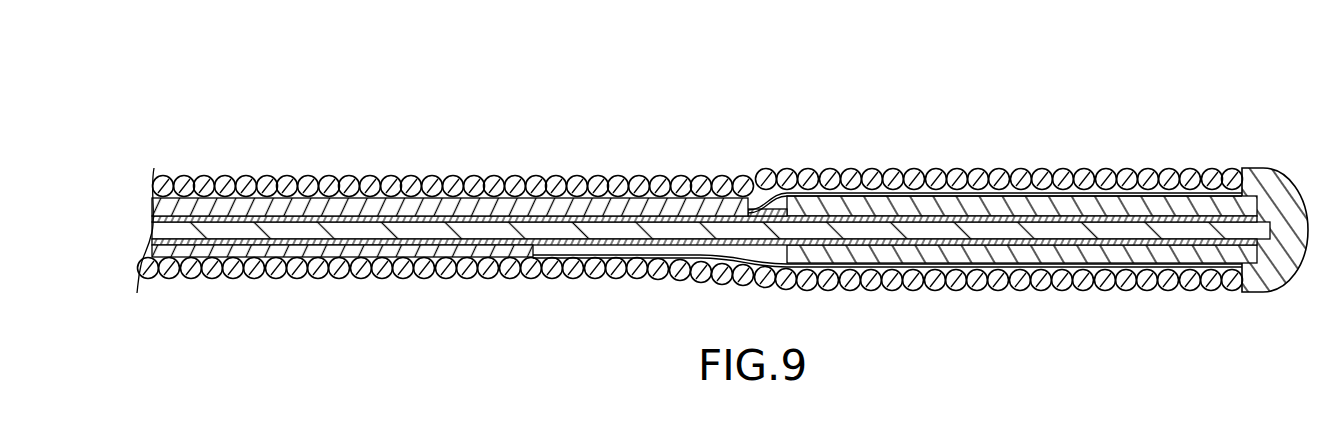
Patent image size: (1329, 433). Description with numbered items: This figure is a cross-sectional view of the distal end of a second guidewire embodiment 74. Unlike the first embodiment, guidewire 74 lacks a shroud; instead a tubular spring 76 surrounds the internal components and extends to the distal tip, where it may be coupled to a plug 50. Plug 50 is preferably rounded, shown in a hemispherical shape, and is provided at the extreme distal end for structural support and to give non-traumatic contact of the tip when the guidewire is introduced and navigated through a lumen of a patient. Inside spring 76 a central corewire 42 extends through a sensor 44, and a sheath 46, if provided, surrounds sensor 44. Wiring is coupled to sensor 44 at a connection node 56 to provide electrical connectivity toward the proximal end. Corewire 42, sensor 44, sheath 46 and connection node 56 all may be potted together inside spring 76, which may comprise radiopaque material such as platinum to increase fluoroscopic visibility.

The second guidewire embodiment 74 is at (254, 115).
The tubular spring 76 is at (383, 182).
The connection node 56 is at (750, 184).
The corewire 42 is at (892, 232).
The sensor 44 is at (1019, 190).
The sheath 46 is at (598, 249).
The plug 50 is at (1272, 190).